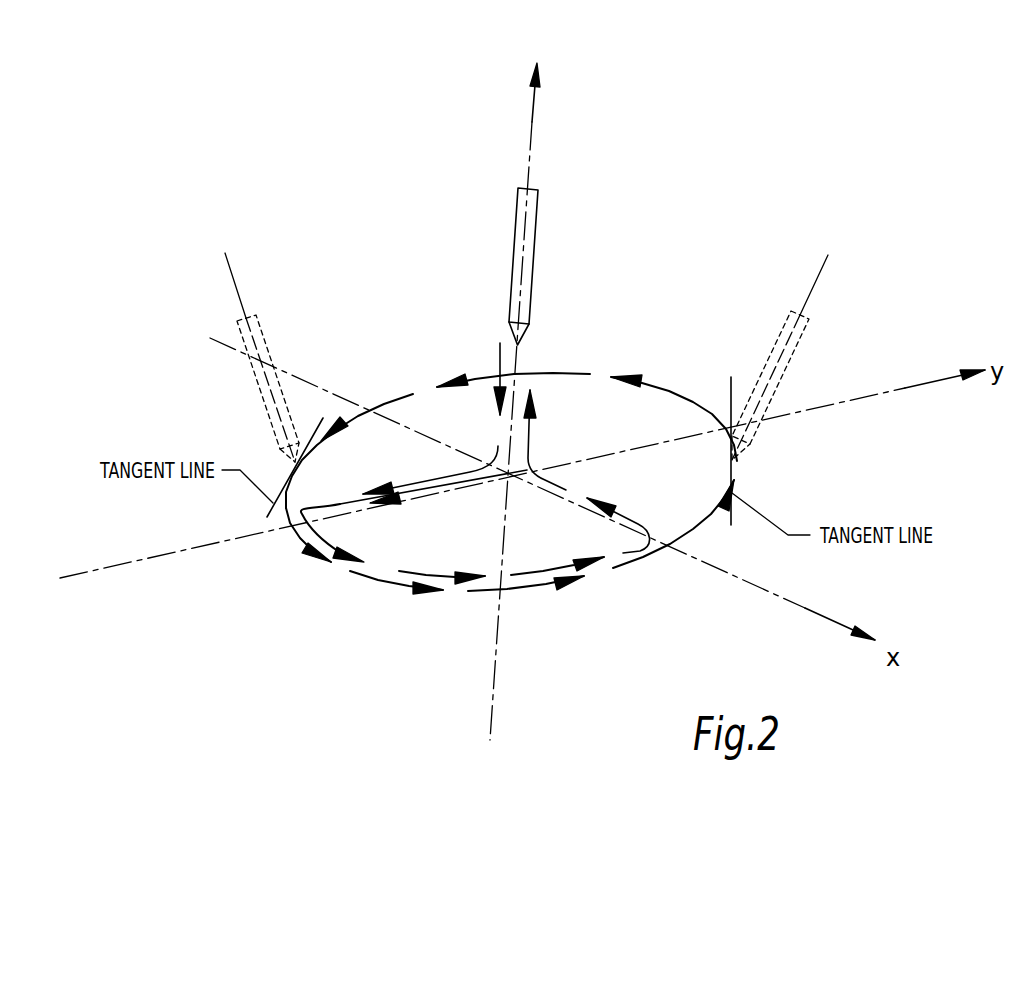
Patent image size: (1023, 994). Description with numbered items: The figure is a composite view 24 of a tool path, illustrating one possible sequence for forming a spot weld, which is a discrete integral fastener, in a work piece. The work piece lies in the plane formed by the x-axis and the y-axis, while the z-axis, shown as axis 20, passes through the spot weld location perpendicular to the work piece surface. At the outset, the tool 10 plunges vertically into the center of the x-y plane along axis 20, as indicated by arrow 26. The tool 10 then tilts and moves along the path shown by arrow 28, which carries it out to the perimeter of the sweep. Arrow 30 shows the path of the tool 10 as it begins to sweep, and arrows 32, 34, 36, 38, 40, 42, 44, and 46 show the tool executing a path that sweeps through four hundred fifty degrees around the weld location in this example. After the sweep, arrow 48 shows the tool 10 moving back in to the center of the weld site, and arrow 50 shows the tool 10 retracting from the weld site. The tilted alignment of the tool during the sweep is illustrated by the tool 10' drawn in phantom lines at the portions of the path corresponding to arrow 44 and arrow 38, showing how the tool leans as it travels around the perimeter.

The tool 10 is at (542, 266).
The tool shown in phantom lines 10' is at (536, 357).
The axis 20 is at (533, 134).
The composite view 24 is at (937, 168).
The arrow 26 is at (500, 353).
The arrow 28 is at (425, 477).
The arrow 30 is at (302, 546).
The arrow 32 is at (383, 584).
The arrow 34 is at (537, 587).
The arrow 36 is at (701, 522).
The arrow 38 is at (657, 387).
The arrow 40 is at (562, 373).
The arrow 42 is at (397, 395).
The arrow 44 is at (331, 547).
The arrow 46 is at (432, 571).
The arrow 48 is at (624, 509).
The arrow 50 is at (535, 436).